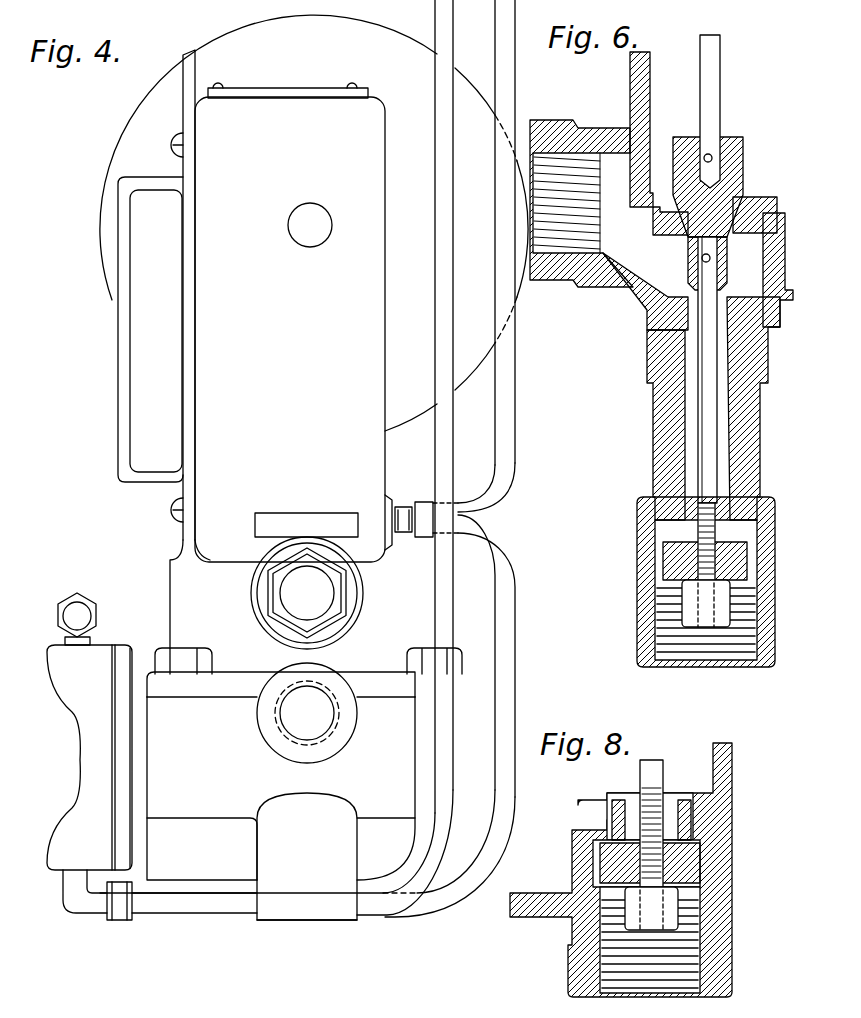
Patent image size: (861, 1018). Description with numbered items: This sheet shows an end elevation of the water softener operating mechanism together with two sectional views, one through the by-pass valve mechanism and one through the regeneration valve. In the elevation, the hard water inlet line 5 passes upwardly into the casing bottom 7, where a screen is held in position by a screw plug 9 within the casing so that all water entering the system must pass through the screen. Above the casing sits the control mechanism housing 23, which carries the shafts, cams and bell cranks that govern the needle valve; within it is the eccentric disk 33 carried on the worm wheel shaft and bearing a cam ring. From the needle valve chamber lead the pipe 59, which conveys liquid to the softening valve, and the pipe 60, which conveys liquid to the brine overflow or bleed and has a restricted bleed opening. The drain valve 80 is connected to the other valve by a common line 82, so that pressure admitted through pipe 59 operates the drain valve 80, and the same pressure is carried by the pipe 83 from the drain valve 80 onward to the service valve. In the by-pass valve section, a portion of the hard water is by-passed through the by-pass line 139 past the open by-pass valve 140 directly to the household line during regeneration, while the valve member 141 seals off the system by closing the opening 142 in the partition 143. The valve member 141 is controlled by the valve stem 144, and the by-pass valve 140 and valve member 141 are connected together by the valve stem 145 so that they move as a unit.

In FIG. 4, the hard water inlet line 5 is at (278, 730).
In FIG. 4, the casing bottom 7 is at (265, 542).
In FIG. 4, the screw plug 9 is at (272, 592).
In FIG. 4, the control mechanism housing 23 is at (212, 320).
In FIG. 4, the eccentric disk 33 is at (132, 235).
In FIG. 4, the pipe 59 is at (500, 555).
In FIG. 4, the pipe 60 is at (508, 462).
In FIG. 4, the drain valve 80 is at (85, 731).
In FIG. 4, the common line 82 is at (58, 612).
In FIG. 4, the pipe 83 is at (238, 905).
In FIG. 6, the by-pass line 139 is at (645, 636).
In FIG. 6, the by-pass valve 140 is at (680, 566).
In FIG. 6, the valve member 141 is at (728, 148).
In FIG. 6, the opening 142 is at (742, 195).
In FIG. 6, the partition 143 is at (775, 212).
In FIG. 6, the valve stem 144 is at (718, 66).
In FIG. 6, the valve stem 145 is at (690, 352).